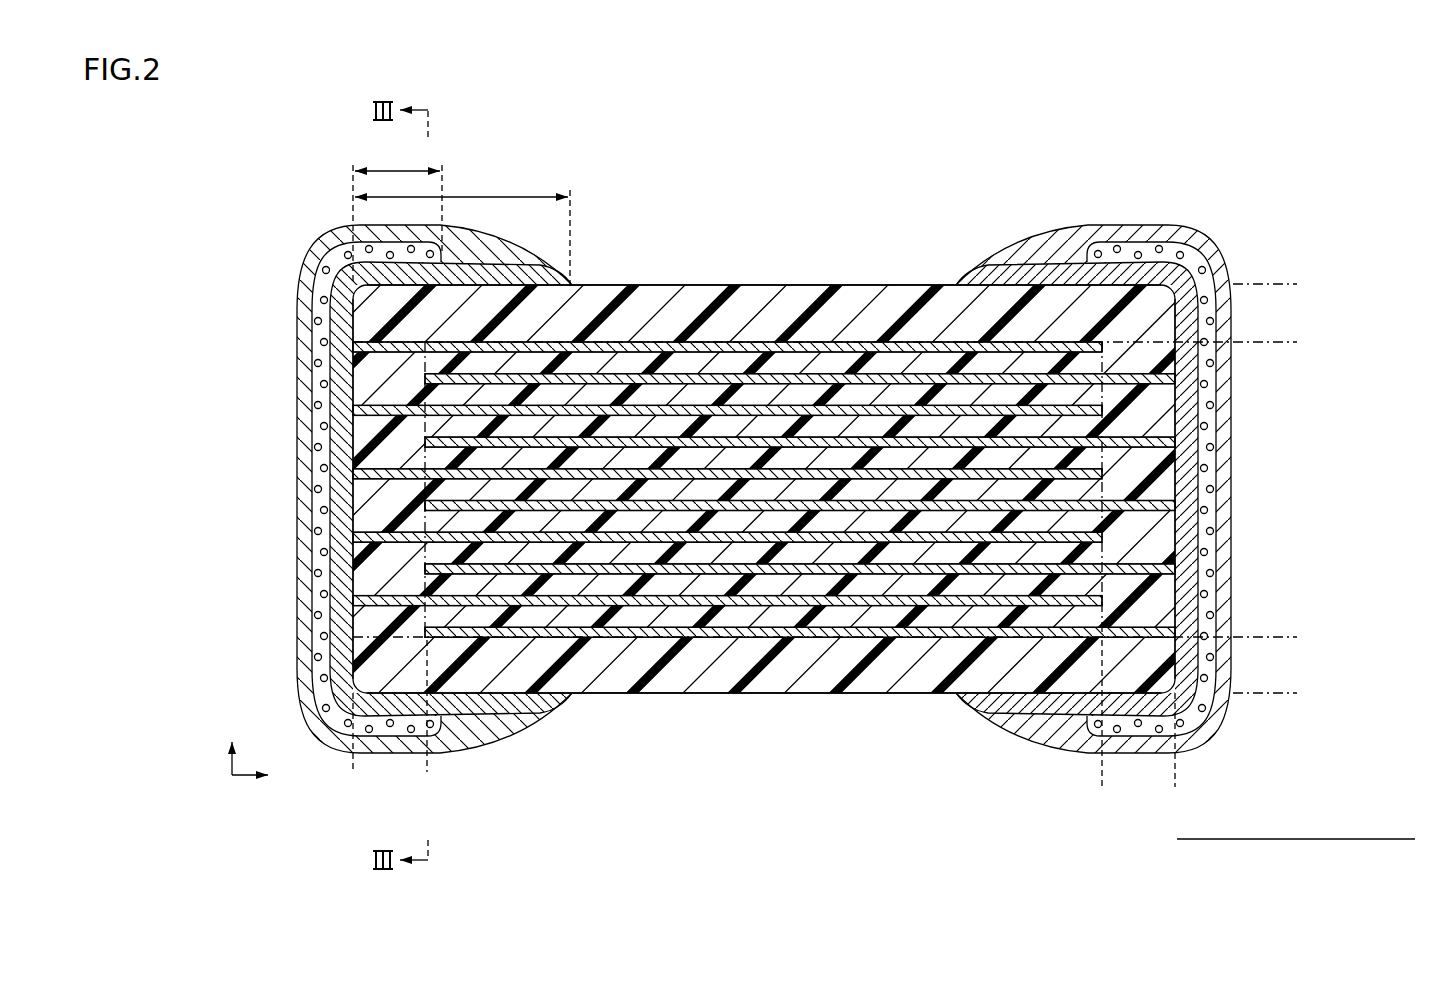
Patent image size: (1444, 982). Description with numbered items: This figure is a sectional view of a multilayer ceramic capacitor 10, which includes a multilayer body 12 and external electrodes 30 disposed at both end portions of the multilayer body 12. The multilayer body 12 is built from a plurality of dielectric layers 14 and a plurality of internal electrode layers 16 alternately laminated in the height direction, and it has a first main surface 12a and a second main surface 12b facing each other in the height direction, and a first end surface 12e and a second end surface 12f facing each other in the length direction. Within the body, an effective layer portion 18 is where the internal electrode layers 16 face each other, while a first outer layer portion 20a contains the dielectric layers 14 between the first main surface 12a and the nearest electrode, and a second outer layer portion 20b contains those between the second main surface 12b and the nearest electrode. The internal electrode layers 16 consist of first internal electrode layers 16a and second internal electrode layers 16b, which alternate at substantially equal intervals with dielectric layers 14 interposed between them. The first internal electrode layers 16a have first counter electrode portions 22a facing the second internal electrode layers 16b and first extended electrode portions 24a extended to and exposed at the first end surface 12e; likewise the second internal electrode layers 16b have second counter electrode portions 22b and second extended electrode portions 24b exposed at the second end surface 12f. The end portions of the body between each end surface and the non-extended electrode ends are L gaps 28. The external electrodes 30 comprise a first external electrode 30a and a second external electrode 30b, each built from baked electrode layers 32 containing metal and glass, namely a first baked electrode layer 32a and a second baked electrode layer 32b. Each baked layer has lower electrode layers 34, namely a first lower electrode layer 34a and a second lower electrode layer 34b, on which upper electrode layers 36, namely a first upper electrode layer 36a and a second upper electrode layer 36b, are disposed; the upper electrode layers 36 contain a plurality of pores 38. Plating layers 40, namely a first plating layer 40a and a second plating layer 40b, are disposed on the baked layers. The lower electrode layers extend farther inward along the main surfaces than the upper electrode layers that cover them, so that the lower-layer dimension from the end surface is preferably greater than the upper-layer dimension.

The multilayer ceramic capacitor 10 is at (742, 152).
The multilayer body 12 is at (722, 478).
The first main surface 12a is at (893, 284).
The second main surface 12b is at (668, 694).
The first end surface 12e is at (352, 452).
The second end surface 12f is at (1176, 450).
The dielectric layers 14 is at (722, 491).
The internal electrode layers 16 is at (722, 491).
The first internal electrode layers 16a is at (620, 458).
The second internal electrode layers 16b is at (676, 458).
The effective layer portion 18 is at (1297, 343).
The first outer layer portion 20a is at (1297, 285).
The second outer layer portion 20b is at (1297, 638).
The first counter electrode portions 22a is at (733, 458).
The second counter electrode portions 22b is at (788, 458).
The first extended electrode portions 24a is at (356, 473).
The second extended electrode portions 24b is at (1172, 442).
The L gaps 28 is at (427, 768).
The external electrodes 30 is at (674, 420).
The first external electrode 30a is at (350, 150).
The second external electrode 30b is at (1223, 128).
The baked electrode layers 32 is at (667, 434).
The first baked electrode layer 32a is at (295, 196).
The second baked electrode layer 32b is at (1150, 174).
The lower electrode layers 34 is at (659, 447).
The first lower electrode layer 34a is at (338, 292).
The second lower electrode layer 34b is at (1060, 280).
The upper electrode layers 36 is at (715, 457).
The first upper electrode layer 36a is at (318, 278).
The second upper electrode layer 36b is at (1125, 243).
The pores 38 is at (322, 345).
The plating layers 40 is at (748, 443).
The first plating layer 40a is at (333, 247).
The second plating layer 40b is at (1165, 235).